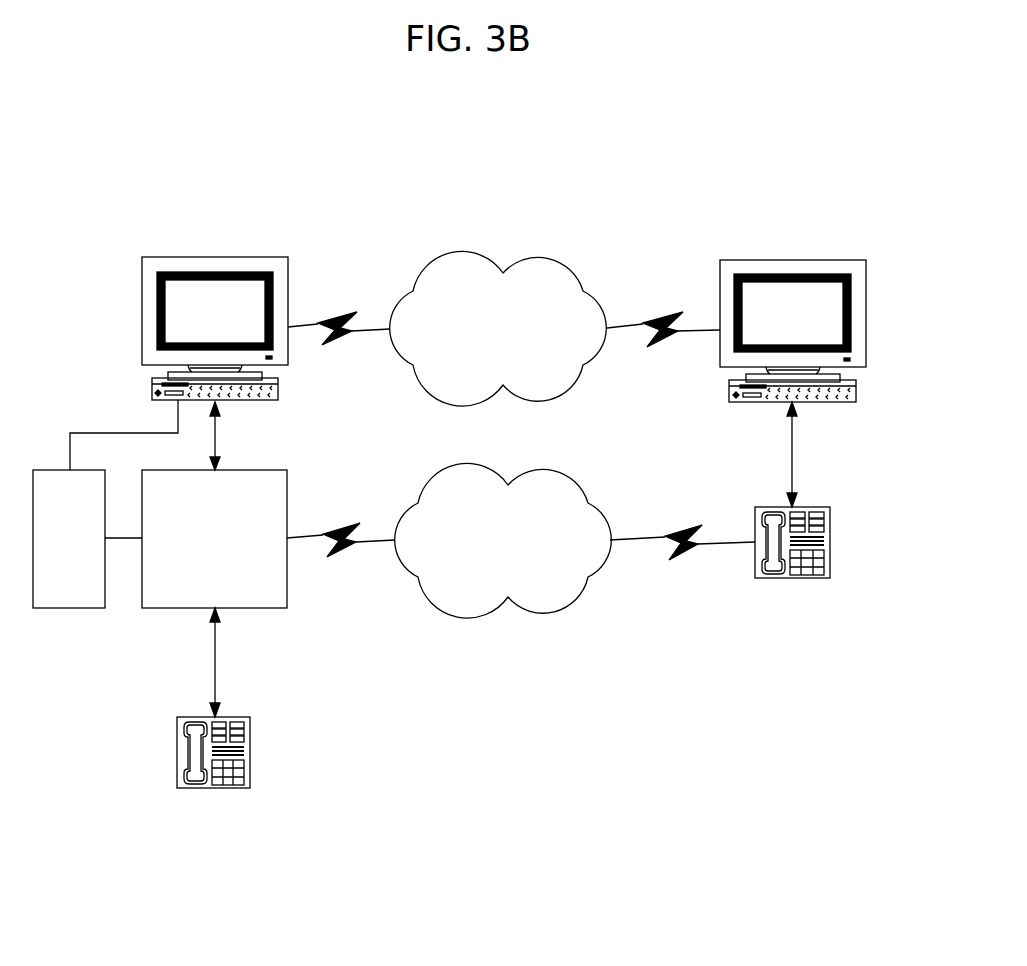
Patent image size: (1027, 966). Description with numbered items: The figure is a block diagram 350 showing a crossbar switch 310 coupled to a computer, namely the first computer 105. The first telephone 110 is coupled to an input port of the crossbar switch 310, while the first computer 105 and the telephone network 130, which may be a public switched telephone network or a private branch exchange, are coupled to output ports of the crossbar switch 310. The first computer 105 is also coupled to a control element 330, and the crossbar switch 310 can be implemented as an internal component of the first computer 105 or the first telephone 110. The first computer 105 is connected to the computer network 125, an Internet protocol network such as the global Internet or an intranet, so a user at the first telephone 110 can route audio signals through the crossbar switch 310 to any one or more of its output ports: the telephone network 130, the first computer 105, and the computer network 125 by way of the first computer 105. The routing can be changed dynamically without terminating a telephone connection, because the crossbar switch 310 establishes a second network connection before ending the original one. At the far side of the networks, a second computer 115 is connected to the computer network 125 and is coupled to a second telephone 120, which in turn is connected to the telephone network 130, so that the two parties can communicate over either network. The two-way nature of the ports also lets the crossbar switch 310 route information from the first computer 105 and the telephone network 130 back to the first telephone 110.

The block diagram 350 is at (267, 95).
The first computer 105 is at (178, 257).
The second computer 115 is at (757, 260).
The computer network 125 is at (465, 258).
The telephone network 130 is at (472, 612).
The crossbar switch 310 is at (252, 470).
The control element 330 is at (68, 608).
The first telephone 110 is at (197, 788).
The second telephone 120 is at (793, 578).